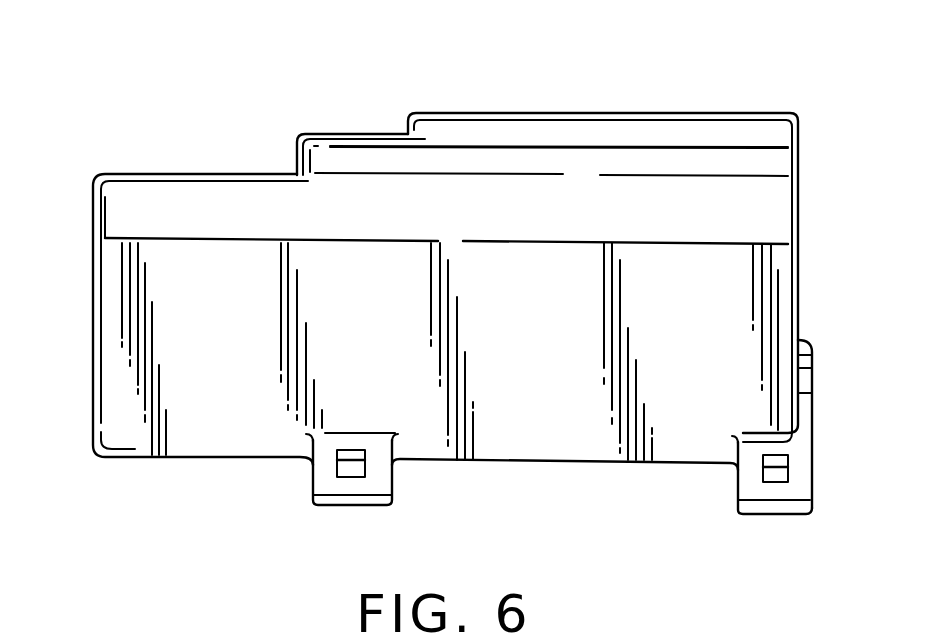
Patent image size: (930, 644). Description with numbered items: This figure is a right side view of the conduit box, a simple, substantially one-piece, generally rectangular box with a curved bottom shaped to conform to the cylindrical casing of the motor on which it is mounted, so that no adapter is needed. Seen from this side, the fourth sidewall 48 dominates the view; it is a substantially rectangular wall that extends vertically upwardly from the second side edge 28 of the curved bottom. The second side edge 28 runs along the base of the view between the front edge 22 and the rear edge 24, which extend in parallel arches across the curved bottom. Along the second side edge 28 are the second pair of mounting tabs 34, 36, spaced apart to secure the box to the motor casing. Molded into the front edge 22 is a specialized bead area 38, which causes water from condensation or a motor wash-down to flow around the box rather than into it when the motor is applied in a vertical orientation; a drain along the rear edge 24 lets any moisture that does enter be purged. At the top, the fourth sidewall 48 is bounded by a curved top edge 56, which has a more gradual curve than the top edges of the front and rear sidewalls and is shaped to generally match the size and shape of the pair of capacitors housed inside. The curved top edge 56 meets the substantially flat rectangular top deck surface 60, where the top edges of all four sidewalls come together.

The front edge 22 is at (813, 452).
The rear edge 24 is at (102, 453).
The second side edge 28 is at (547, 462).
The mounting tab 34 is at (375, 482).
The mounting tab 36 is at (792, 488).
The bead area 38 is at (807, 347).
The fourth sidewall 48 is at (512, 324).
The curved top edge 56 is at (636, 157).
The top deck surface 60 is at (488, 92).